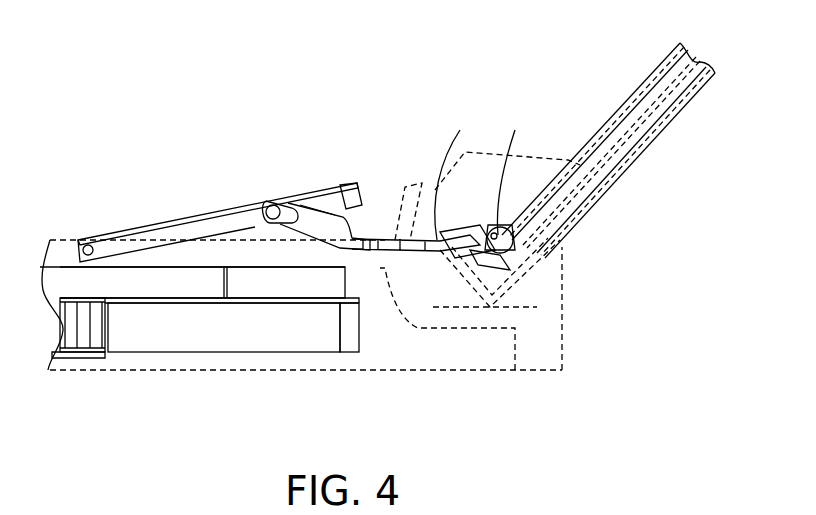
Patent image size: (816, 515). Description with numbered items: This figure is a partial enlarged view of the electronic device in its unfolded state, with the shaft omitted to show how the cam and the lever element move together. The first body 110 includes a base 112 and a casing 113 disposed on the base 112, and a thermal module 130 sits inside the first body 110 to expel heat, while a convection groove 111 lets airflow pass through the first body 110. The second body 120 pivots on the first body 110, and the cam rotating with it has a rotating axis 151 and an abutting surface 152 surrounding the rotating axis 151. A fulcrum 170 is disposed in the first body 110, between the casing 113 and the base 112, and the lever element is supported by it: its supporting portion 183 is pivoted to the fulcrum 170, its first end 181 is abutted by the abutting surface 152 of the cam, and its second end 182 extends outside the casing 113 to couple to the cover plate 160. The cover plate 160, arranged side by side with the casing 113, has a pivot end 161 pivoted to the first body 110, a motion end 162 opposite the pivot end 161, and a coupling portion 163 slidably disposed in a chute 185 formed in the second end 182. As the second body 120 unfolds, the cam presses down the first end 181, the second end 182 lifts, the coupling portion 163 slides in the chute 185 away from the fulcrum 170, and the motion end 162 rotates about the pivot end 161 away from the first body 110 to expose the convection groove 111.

The first body 110 is at (135, 372).
The convection groove 111 is at (60, 298).
The base 112 is at (428, 343).
The casing 113 is at (408, 205).
The second body 120 is at (632, 80).
The thermal module 130 is at (180, 354).
The rotating axis 151 is at (505, 220).
The abutting surface 152 is at (505, 233).
The cover plate 160 is at (198, 222).
The pivot end 161 is at (88, 243).
The motion end 162 is at (352, 190).
The coupling portion 163 is at (268, 205).
The fulcrum 170 is at (445, 290).
The first end 181 is at (510, 265).
The second end 182 is at (298, 205).
The supporting portion 183 is at (445, 185).
The chute 185 is at (310, 192).